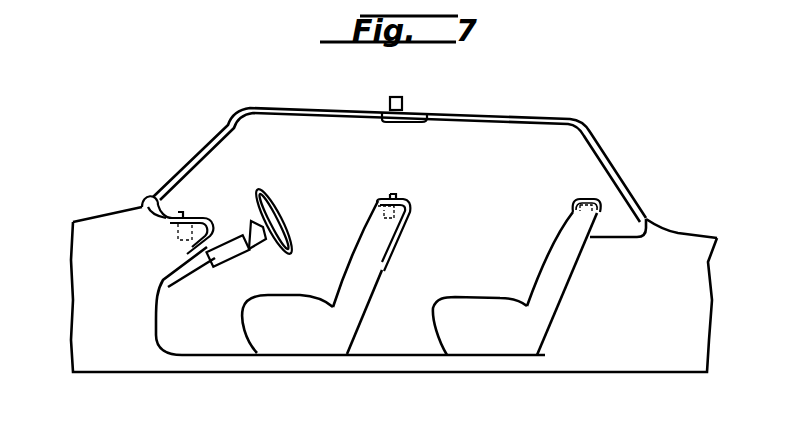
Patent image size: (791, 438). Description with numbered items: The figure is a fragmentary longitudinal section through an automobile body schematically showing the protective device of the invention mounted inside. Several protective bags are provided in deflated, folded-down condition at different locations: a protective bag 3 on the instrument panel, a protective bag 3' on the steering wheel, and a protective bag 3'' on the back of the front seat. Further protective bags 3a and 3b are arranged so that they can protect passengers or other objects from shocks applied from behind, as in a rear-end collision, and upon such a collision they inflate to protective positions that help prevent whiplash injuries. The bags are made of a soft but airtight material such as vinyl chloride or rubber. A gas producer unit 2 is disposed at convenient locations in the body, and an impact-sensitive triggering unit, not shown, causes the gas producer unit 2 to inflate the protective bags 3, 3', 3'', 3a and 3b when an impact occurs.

The gas producer unit 2 is at (142, 205).
The protective bag 3 is at (185, 200).
The protective bag 3a is at (422, 110).
The protective bag 3' is at (276, 221).
The protective bag 3'' is at (415, 225).
The protective bag 3b is at (592, 201).